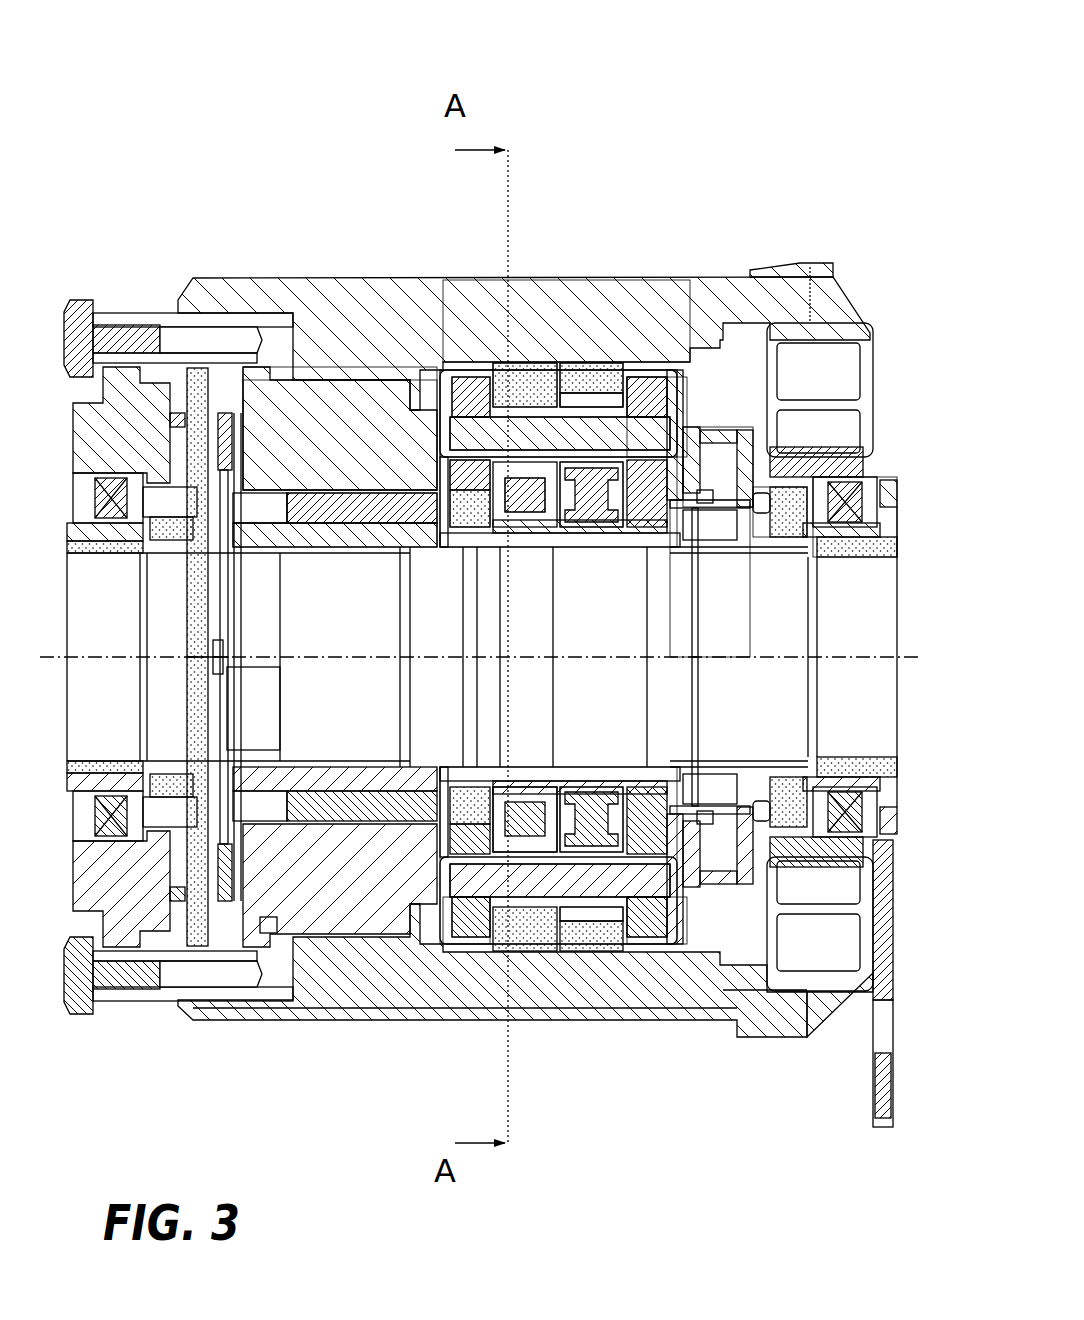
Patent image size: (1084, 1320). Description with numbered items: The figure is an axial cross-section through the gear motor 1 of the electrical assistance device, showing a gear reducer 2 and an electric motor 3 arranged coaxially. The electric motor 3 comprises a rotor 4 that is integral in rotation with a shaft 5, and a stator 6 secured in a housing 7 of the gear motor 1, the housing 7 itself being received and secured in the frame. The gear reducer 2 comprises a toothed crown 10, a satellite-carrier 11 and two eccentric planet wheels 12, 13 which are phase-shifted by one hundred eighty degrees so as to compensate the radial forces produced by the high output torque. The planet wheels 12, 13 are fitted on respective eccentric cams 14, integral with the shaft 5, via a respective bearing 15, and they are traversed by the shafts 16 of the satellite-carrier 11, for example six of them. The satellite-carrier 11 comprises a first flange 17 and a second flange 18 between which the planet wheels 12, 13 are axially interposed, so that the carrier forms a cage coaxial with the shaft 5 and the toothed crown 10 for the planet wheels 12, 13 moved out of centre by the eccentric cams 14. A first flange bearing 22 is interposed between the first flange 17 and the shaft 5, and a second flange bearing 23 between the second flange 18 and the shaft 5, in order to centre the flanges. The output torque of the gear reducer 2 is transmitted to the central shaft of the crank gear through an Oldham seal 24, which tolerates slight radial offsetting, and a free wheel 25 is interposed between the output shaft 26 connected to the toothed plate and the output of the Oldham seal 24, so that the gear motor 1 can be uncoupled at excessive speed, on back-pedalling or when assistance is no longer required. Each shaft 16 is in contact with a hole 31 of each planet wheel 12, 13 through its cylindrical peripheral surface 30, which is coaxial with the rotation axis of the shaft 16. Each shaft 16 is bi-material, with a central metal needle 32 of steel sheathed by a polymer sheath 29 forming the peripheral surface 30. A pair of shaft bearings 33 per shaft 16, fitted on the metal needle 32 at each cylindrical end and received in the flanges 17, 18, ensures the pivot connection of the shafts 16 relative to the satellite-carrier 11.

The gear motor 1 is at (150, 88).
The gear reducer 2 is at (621, 264).
The electric motor 3 is at (265, 385).
The rotor 4 is at (330, 508).
The shaft 5 is at (348, 530).
The stator 6 is at (372, 385).
The housing 7 is at (503, 312).
The toothed crown 10 is at (552, 352).
The satellite-carrier 11 is at (660, 383).
The eccentric planet wheel 12 is at (535, 378).
The eccentric planet wheel 13 is at (595, 378).
The eccentric cam 14 is at (537, 781).
The bearing 15 is at (545, 811).
The shaft 16 is at (474, 440).
The first flange 17 is at (450, 940).
The second flange 18 is at (668, 942).
The first flange bearing 22 is at (468, 527).
The second flange bearing 23 is at (648, 517).
The Oldham seal 24 is at (705, 495).
The free wheel 25 is at (762, 493).
The output shaft 26 is at (892, 533).
The sheath 29 is at (502, 838).
The peripheral surface 30 is at (546, 458).
The hole 31 is at (592, 392).
The metal needle 32 is at (639, 440).
The shaft bearing 33 is at (480, 381).